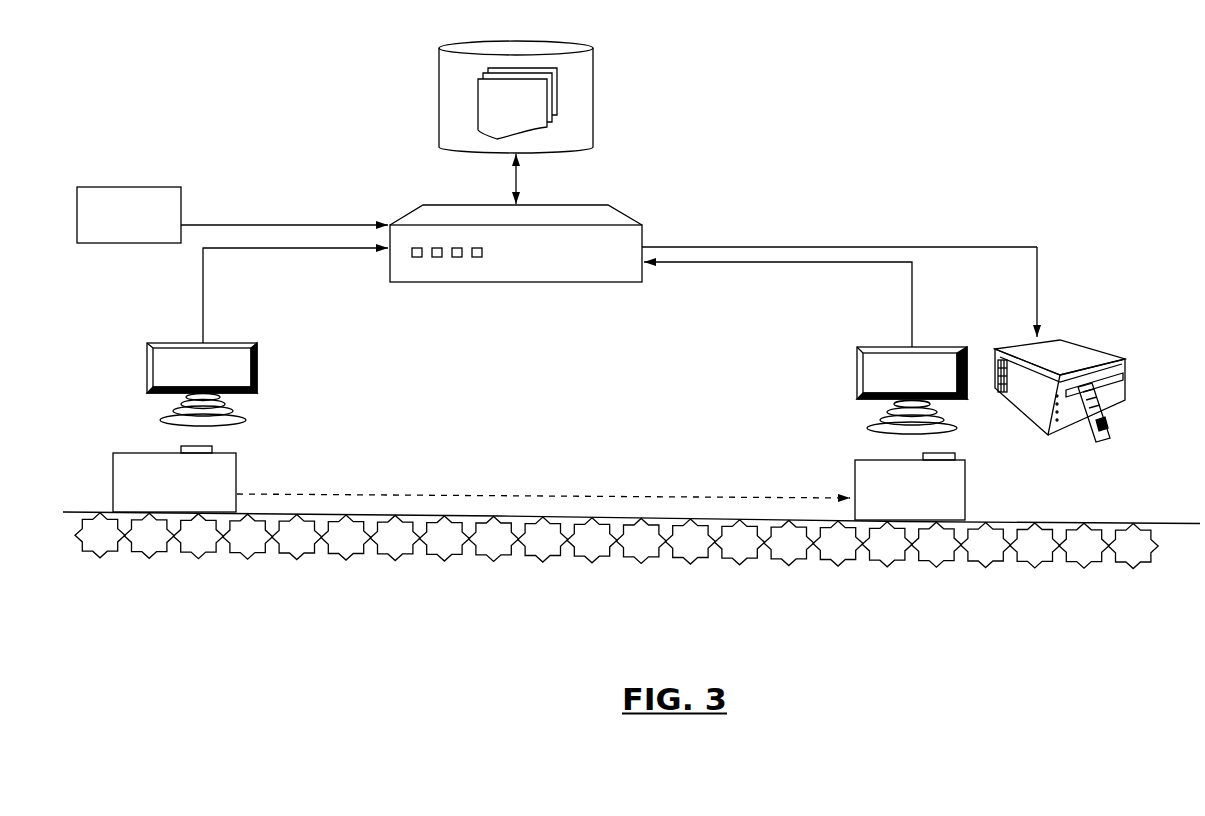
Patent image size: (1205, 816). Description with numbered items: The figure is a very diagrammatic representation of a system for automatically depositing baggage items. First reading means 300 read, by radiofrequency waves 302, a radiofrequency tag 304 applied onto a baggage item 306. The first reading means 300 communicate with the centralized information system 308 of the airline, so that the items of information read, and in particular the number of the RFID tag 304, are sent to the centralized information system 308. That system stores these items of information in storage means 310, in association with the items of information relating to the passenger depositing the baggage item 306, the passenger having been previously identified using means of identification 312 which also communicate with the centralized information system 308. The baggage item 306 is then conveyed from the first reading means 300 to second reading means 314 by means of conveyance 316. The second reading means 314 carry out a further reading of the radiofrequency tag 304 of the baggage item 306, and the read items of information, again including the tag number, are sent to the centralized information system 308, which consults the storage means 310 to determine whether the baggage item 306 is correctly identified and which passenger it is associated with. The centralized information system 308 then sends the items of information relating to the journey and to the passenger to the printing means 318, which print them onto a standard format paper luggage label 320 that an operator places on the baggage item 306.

The first reading means 300 is at (167, 342).
The radiofrequency waves 302 is at (163, 407).
The radiofrequency tag 304 is at (212, 447).
The baggage item 306 is at (113, 483).
The centralized information system 308 is at (618, 212).
The storage means 310 is at (593, 88).
The means of identification 312 is at (126, 187).
The second reading means 314 is at (863, 375).
The means of conveyance 316 is at (327, 575).
The printing means 318 is at (1072, 340).
The luggage label 320 is at (1110, 430).